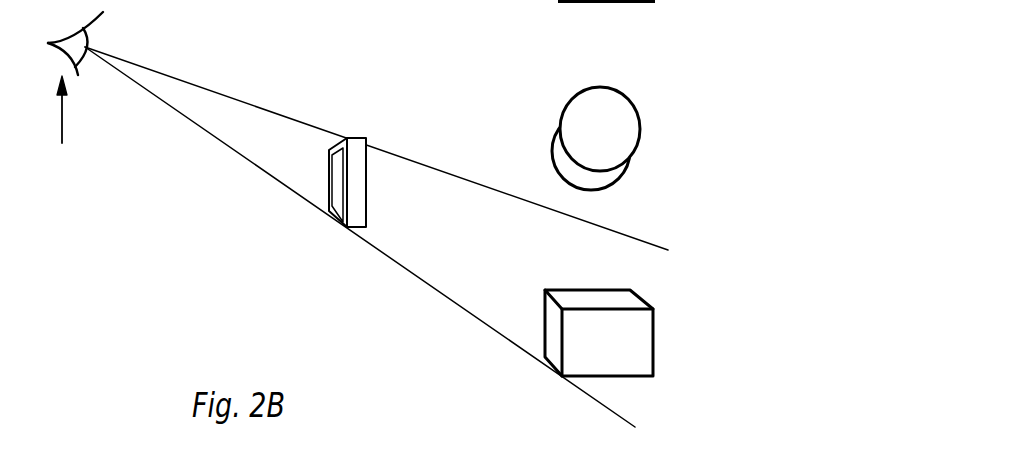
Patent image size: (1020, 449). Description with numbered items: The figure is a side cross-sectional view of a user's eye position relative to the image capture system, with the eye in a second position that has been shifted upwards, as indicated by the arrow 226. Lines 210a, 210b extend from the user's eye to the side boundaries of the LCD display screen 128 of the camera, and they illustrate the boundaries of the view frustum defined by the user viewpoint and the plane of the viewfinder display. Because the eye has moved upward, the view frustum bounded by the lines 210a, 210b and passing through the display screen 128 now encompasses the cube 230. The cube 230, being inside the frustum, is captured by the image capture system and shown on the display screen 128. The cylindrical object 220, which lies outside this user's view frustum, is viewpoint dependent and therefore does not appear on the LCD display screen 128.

The LCD display screen 128 is at (355, 150).
The cylindrical object 220 is at (632, 122).
The cube 230 is at (635, 302).
The arrow 226 is at (62, 125).
The line 210a is at (637, 238).
The line 210b is at (625, 415).